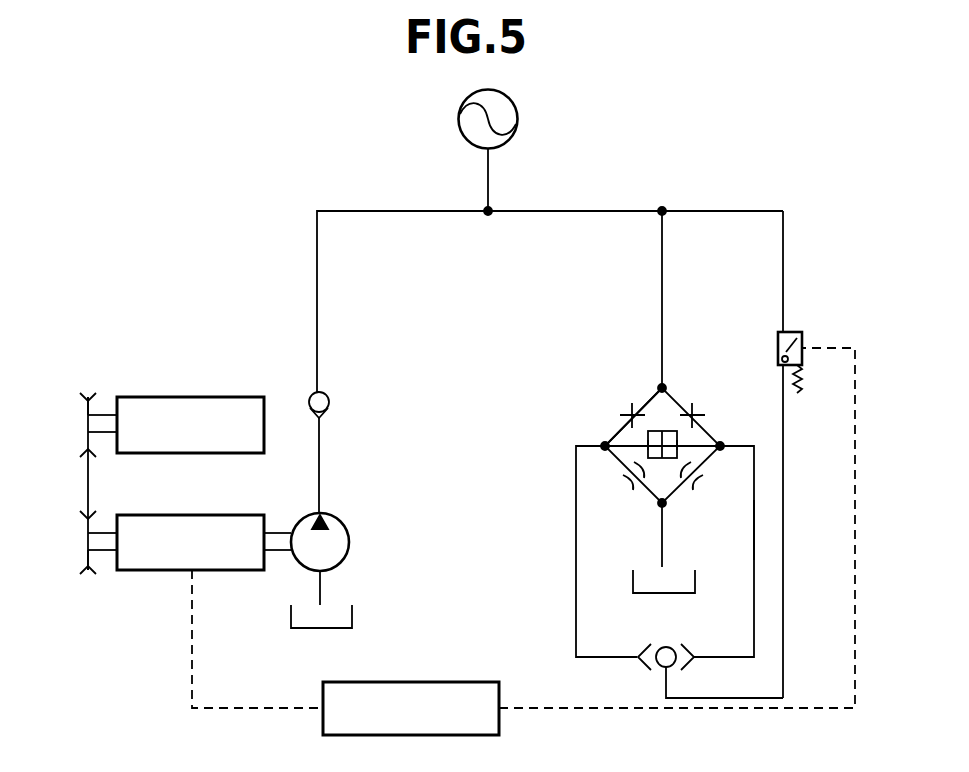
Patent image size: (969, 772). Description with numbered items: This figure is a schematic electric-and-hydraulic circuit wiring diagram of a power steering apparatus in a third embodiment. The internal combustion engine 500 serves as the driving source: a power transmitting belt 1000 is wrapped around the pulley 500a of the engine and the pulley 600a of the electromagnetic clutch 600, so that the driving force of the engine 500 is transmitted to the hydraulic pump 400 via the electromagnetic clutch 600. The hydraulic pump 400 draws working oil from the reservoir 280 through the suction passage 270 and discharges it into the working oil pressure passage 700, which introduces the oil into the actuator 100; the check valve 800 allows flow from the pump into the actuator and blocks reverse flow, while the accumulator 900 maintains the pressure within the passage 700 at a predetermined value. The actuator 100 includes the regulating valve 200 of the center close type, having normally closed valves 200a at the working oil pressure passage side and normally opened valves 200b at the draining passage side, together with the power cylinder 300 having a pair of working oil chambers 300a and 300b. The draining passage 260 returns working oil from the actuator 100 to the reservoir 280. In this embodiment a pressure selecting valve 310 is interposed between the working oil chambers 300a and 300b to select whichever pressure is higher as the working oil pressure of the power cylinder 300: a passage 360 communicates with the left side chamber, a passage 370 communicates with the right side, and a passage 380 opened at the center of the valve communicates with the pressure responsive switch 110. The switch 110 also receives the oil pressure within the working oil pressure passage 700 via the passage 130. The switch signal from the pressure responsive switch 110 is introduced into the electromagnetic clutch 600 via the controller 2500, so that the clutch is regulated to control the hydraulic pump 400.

The accumulator 900 is at (518, 118).
The working oil pressure passage 700 is at (444, 211).
The passage 130 is at (783, 260).
The pressure responsive switch 110 is at (802, 335).
The actuator 100 is at (685, 325).
The normally closed valves 200a is at (628, 410).
The power cylinder 300 is at (628, 436).
The working oil chamber 300a is at (647, 450).
The working oil chamber 300b is at (678, 450).
The regulating valve 200 is at (643, 498).
The normally opened valves 200b is at (628, 478).
The passage 360 is at (576, 578).
The passage 370 is at (754, 527).
The draining passage 260 is at (662, 552).
The reservoir 280 is at (352, 614).
The pressure selecting valve 310 is at (636, 642).
The passage 380 is at (783, 628).
The check valve 800 is at (330, 400).
The hydraulic pump 400 is at (347, 522).
The suction passage 270 is at (320, 587).
The internal combustion engine 500 is at (193, 397).
The pulley 500a is at (88, 397).
The electromagnetic clutch 600 is at (218, 515).
The pulley 600a is at (88, 575).
The power transmitting belt 1000 is at (88, 490).
The controller 2500 is at (397, 682).